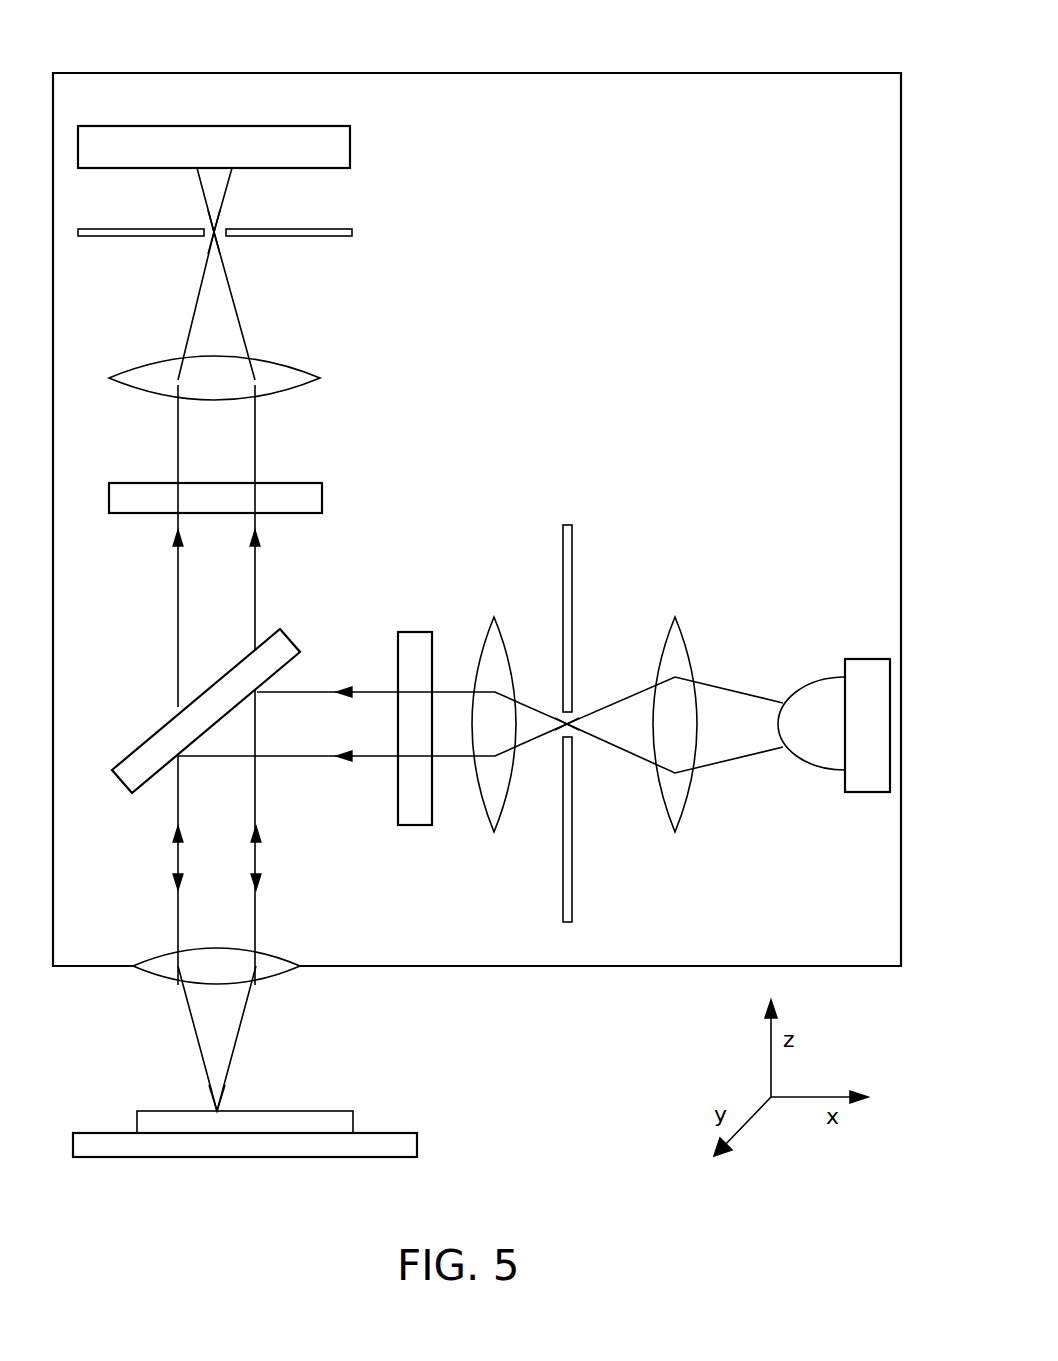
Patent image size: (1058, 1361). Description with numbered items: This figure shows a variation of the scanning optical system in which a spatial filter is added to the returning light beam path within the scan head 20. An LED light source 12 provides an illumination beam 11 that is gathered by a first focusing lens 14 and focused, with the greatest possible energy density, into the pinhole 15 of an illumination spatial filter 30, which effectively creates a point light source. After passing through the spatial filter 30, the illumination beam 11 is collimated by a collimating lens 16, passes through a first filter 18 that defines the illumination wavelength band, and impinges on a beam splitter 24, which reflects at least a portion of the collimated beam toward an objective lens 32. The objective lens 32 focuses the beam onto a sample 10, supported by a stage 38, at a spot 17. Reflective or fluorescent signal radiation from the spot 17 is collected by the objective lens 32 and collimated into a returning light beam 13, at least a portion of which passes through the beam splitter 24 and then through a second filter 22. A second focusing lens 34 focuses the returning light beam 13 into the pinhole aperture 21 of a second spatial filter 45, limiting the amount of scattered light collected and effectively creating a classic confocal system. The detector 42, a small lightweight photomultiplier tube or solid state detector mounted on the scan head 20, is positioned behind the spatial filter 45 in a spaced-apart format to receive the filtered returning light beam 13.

The scan head 20 is at (797, 73).
The detector 42 is at (350, 147).
The second spatial filter 45 is at (352, 232).
The pinhole aperture 21 is at (218, 237).
The second focusing lens 34 is at (305, 368).
The second filter 22 is at (322, 492).
The returning light beam 13 is at (177, 613).
The beam splitter 24 is at (150, 737).
The first filter 18 is at (414, 632).
The collimating lens 16 is at (512, 630).
The spatial filter 30 is at (563, 522).
The pinhole 15 is at (562, 733).
The first focusing lens 14 is at (693, 630).
The LED light source 12 is at (824, 688).
The illumination beam 11 is at (740, 762).
The objective lens 32 is at (285, 956).
The spot 17 is at (200, 1096).
The sample 10 is at (324, 1111).
The stage 38 is at (103, 1160).